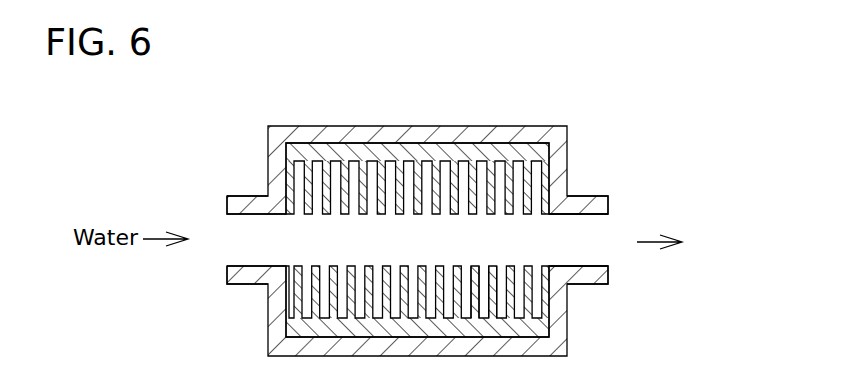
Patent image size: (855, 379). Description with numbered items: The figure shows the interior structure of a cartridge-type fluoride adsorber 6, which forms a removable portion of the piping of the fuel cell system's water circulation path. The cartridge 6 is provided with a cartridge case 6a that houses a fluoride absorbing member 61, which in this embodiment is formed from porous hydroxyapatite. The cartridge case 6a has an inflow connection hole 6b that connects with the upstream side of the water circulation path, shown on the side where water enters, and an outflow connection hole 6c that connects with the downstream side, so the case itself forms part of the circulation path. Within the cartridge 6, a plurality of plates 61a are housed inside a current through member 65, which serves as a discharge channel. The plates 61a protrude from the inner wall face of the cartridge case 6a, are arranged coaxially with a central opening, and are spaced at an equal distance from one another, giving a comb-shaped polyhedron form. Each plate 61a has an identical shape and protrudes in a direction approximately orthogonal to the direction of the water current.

The fluoride adsorber 6 is at (527, 126).
The cartridge case 6a is at (322, 126).
The inflow connection hole 6b is at (246, 194).
The outflow connection hole 6c is at (593, 197).
The fluoride absorbing member 61 is at (548, 327).
The plates 61a is at (475, 267).
The current through member 65 is at (578, 226).